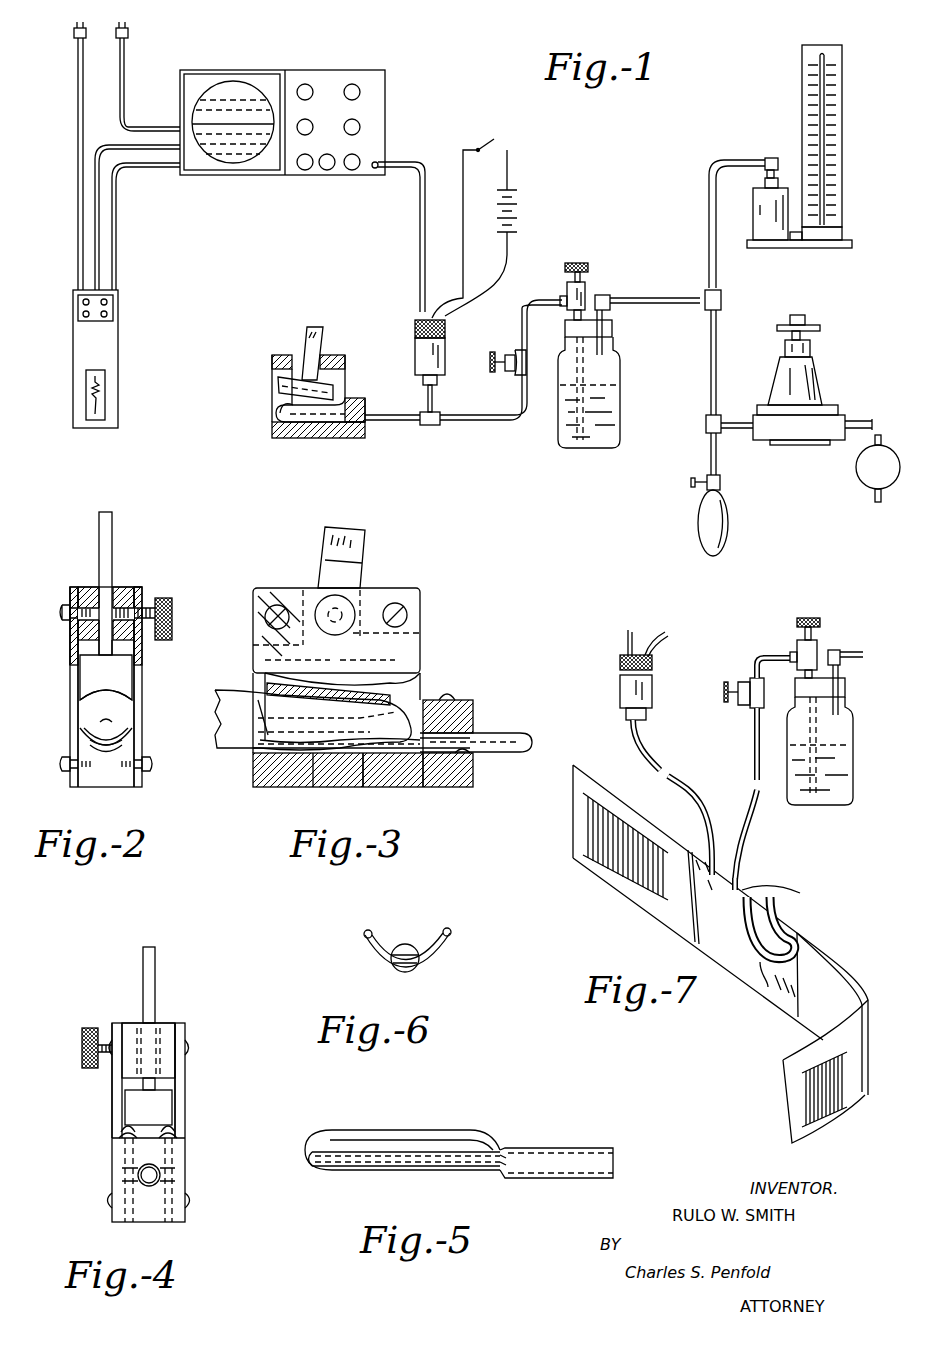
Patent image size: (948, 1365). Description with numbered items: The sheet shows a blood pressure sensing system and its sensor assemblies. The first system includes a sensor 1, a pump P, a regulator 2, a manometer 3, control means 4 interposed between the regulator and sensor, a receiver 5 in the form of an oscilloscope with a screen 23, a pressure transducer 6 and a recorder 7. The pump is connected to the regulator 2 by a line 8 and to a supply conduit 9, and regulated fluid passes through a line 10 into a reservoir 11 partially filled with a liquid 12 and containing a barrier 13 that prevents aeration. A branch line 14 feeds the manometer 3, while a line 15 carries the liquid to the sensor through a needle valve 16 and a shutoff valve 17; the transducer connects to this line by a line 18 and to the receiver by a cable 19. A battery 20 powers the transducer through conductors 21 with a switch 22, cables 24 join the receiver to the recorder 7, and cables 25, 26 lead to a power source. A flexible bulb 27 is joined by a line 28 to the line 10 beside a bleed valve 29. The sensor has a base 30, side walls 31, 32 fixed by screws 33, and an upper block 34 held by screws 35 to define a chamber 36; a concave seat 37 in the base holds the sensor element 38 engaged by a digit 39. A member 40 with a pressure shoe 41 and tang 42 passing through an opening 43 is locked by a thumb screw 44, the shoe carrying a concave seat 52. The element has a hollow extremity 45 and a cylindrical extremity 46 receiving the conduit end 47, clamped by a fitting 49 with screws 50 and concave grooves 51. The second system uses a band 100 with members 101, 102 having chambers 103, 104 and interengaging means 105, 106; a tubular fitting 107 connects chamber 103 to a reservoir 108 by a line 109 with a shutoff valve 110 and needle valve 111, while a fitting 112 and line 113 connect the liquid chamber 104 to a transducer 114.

In FIG. 1, the sensor 1 is at (306, 378).
In FIG. 2, the sensor 1 is at (116, 660).
In FIG. 3, the sensor 1 is at (368, 667).
In FIG. 4, the sensor 1 is at (136, 1088).
In FIG. 1, the regulator 2 is at (834, 357).
In FIG. 1, the manometer 3 is at (745, 140).
In FIG. 1, the control means 4 is at (585, 262).
In FIG. 1, the receiver 5 is at (391, 99).
In FIG. 1, the pressure transducer 6 is at (404, 317).
In FIG. 1, the recorder 7 is at (125, 329).
In FIG. 1, the line 8 is at (864, 420).
In FIG. 1, the supply conduit 9 is at (872, 497).
In FIG. 1, the line 10 is at (636, 306).
In FIG. 1, the reservoir 11 is at (622, 432).
In FIG. 1, the liquid 12 is at (625, 410).
In FIG. 1, the barrier 13 is at (620, 387).
In FIG. 1, the branch line 14 is at (709, 195).
In FIG. 1, the line 15 is at (392, 422).
In FIG. 3, the line 15 is at (500, 742).
In FIG. 1, the needle valve 16 is at (588, 292).
In FIG. 1, the shutoff valve 17 is at (505, 350).
In FIG. 1, the line 18 is at (434, 395).
In FIG. 1, the cable 19 is at (418, 240).
In FIG. 1, the battery 20 is at (525, 205).
In FIG. 1, the conductors 21 is at (505, 258).
In FIG. 1, the switch 22 is at (491, 146).
In FIG. 1, the screen 23 is at (235, 155).
In FIG. 1, the cables 24 is at (102, 247).
In FIG. 1, the cable 25 is at (123, 72).
In FIG. 1, the cable 26 is at (74, 80).
In FIG. 1, the resiliently flexible bulb 27 is at (728, 520).
In FIG. 1, the line 28 is at (720, 472).
In FIG. 1, the bleed valve 29 is at (690, 483).
In FIG. 1, the rectangular base 30 is at (335, 438).
In FIG. 2, the rectangular base 30 is at (118, 787).
In FIG. 3, the rectangular base 30 is at (346, 787).
In FIG. 4, the rectangular base 30 is at (185, 1218).
In FIG. 2, the side wall 31 is at (74, 588).
In FIG. 4, the side wall 31 is at (185, 1028).
In FIG. 2, the side wall 32 is at (142, 590).
In FIG. 4, the side wall 32 is at (118, 1025).
In FIG. 2, the screws 33 is at (62, 768).
In FIG. 4, the screws 33 is at (106, 1200).
In FIG. 1, the upper block 34 is at (285, 355).
In FIG. 2, the upper block 34 is at (125, 585).
In FIG. 3, the upper block 34 is at (336, 630).
In FIG. 4, the upper block 34 is at (163, 1035).
In FIG. 2, the screws 35 is at (64, 618).
In FIG. 4, the screws 35 is at (190, 1052).
In FIG. 2, the chamber 36 is at (88, 712).
In FIG. 3, the chamber 36 is at (258, 683).
In FIG. 1, the concave seat 37 is at (283, 413).
In FIG. 2, the concave seat 37 is at (104, 752).
In FIG. 3, the concave seat 37 is at (362, 787).
In FIG. 1, the sensor element 38 is at (274, 416).
In FIG. 2, the sensor element 38 is at (120, 723).
In FIG. 5, the sensor element 38 is at (459, 1139).
In FIG. 6, the sensor element 38 is at (424, 942).
In FIG. 3, the digit 39 is at (230, 750).
In FIG. 3, the member 40 is at (365, 540).
In FIG. 1, the pressure shoe 41 is at (330, 385).
In FIG. 2, the pressure shoe 41 is at (112, 678).
In FIG. 3, the pressure shoe 41 is at (398, 692).
In FIG. 4, the pressure shoe 41 is at (160, 1105).
In FIG. 1, the tang 42 is at (323, 330).
In FIG. 2, the tang 42 is at (112, 533).
In FIG. 3, the tang 42 is at (362, 572).
In FIG. 4, the tang 42 is at (156, 972).
In FIG. 1, the opening 43 is at (325, 357).
In FIG. 2, the opening 43 is at (108, 600).
In FIG. 3, the opening 43 is at (400, 627).
In FIG. 2, the thumb screw 44 is at (172, 610).
In FIG. 4, the thumb screw 44 is at (80, 1052).
In FIG. 3, the hollow extremity 45 is at (310, 757).
In FIG. 5, the hollow extremity 45 is at (394, 1130).
In FIG. 6, the hollow extremity 45 is at (440, 952).
In FIG. 3, the hollow cylindrical extremity 46 is at (470, 728).
In FIG. 4, the hollow cylindrical extremity 46 is at (160, 1170).
In FIG. 5, the hollow cylindrical extremity 46 is at (556, 1150).
In FIG. 6, the hollow cylindrical extremity 46 is at (405, 944).
In FIG. 3, the end of conduit 47 is at (432, 787).
In FIG. 3, the fitting 49 is at (470, 702).
In FIG. 3, the screws 50 is at (448, 698).
In FIG. 4, the screws 50 is at (126, 1125).
In FIG. 3, the concave grooves 51 is at (470, 758).
In FIG. 4, the concave grooves 51 is at (138, 1181).
In FIG. 2, the concave seat 52 is at (92, 702).
In FIG. 3, the concave seat 52 is at (270, 710).
In FIG. 7, the band 100 is at (721, 954).
In FIG. 7, the member 101 is at (748, 886).
In FIG. 7, the member 102 is at (800, 935).
In FIG. 7, the chamber 103 is at (780, 922).
In FIG. 7, the chamber 104 is at (770, 983).
In FIG. 7, the interengaging means 105 is at (640, 865).
In FIG. 7, the interengaging means 106 is at (810, 1095).
In FIG. 7, the tubular fitting 107 is at (740, 872).
In FIG. 7, the reservoir 108 is at (805, 805).
In FIG. 7, the line 109 is at (774, 652).
In FIG. 7, the shutoff valve 110 is at (742, 680).
In FIG. 7, the needle valve 111 is at (810, 618).
In FIG. 7, the fitting 112 is at (708, 832).
In FIG. 7, the line 113 is at (672, 778).
In FIG. 7, the pressure transducer 114 is at (652, 698).